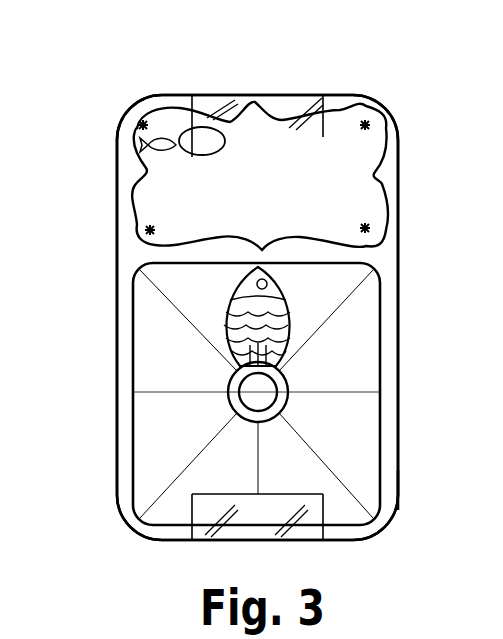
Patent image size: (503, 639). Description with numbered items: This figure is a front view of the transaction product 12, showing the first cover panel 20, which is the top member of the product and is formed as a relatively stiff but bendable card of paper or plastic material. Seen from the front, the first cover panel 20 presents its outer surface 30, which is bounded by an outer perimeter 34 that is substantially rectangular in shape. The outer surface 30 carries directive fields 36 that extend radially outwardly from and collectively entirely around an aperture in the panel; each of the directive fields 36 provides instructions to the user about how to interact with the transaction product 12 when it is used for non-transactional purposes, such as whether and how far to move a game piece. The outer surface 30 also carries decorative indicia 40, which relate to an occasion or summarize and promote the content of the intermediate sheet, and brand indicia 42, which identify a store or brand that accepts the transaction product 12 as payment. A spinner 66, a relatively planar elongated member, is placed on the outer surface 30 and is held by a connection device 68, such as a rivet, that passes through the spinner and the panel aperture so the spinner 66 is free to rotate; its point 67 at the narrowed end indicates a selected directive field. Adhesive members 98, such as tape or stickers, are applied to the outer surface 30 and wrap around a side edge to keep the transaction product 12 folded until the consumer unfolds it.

The transaction product 12 is at (70, 48).
The first cover panel 20 is at (385, 157).
The adhesive member 98 is at (272, 106).
The decorative indicia 40 is at (365, 190).
The brand indicia 42 is at (148, 150).
The outer surface 30 is at (382, 261).
The directive fields 36 is at (368, 441).
The outer perimeter 34 is at (399, 492).
The point 67 is at (236, 277).
The spinner 66 is at (226, 323).
The connection device 68 is at (257, 392).